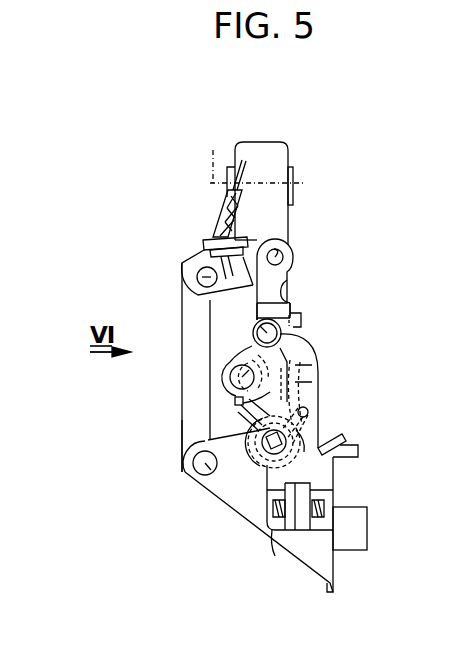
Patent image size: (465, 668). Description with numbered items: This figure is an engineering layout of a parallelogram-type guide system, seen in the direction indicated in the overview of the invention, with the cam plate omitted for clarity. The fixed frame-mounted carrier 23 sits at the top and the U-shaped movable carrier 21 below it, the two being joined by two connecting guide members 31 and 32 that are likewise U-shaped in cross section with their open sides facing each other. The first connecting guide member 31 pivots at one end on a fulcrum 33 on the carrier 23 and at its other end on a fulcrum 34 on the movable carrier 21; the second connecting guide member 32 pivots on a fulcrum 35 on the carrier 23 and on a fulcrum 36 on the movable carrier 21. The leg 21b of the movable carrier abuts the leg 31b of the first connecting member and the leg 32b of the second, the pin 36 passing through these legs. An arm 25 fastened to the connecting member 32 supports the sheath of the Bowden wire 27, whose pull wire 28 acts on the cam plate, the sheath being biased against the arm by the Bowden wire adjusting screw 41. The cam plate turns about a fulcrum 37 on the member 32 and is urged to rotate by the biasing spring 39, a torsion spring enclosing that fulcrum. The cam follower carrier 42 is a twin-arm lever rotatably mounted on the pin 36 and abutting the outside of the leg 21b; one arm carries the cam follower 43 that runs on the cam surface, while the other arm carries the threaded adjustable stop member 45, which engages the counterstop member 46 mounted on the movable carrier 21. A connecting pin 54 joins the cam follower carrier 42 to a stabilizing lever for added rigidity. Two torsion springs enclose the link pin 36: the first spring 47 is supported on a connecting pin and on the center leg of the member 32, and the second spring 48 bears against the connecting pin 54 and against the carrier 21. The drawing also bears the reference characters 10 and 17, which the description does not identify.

The axis of door 10 is at (213, 150).
The bracket 17 is at (350, 528).
The movable carrier 21 is at (215, 492).
The leg of the movable carrier 21b is at (252, 500).
The frame-mounted carrier 23 is at (278, 148).
The arm 25 is at (210, 238).
The Bowden wire 27 is at (212, 198).
The pull wire 28 is at (245, 160).
The connecting guide member 31 is at (190, 350).
The leg of the connecting member 31b is at (181, 436).
The connecting guide member 32 is at (290, 290).
The leg of the connecting member 32b is at (291, 313).
The fulcrum 33 is at (196, 272).
The fulcrum 34 is at (205, 476).
The fulcrum 35 is at (286, 244).
The fulcrum pin 36 is at (318, 445).
The fulcrum 37 is at (225, 377).
The biasing spring 39 is at (238, 348).
The Bowden wire adjusting screw 41 is at (206, 246).
The cam follower carrier 42 is at (318, 376).
The cam follower 43 is at (254, 325).
The adjustable stop member 45 is at (273, 534).
The counterstop member 46 is at (330, 493).
The first spring 47 is at (250, 410).
The second spring 48 is at (344, 444).
The connecting pin 54 is at (306, 410).